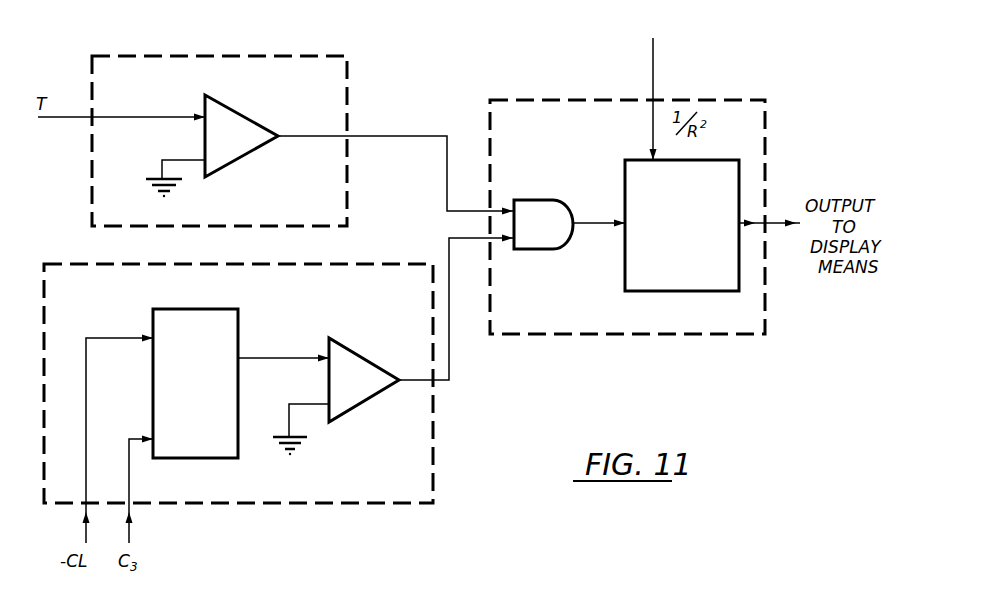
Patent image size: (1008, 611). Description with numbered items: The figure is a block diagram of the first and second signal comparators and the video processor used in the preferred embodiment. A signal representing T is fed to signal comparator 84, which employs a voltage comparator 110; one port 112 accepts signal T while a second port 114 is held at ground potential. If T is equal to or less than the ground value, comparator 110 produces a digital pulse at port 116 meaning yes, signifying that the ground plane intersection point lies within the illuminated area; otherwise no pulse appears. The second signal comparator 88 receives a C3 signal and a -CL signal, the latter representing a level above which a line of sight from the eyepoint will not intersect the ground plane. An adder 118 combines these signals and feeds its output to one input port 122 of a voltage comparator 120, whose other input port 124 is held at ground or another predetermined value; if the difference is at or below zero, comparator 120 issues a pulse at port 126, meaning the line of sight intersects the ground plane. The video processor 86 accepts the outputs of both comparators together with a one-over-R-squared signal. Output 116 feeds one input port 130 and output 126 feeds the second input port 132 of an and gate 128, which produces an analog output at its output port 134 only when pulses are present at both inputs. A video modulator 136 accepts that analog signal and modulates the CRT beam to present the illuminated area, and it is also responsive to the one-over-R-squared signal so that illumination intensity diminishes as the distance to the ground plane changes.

The signal comparator 84 is at (348, 56).
The video processor 86 is at (617, 334).
The second signal comparator 88 is at (433, 465).
The voltage comparator 110 is at (244, 140).
The port 112 is at (205, 114).
The second port 114 is at (205, 157).
The port 116 is at (278, 135).
The adder 118 is at (226, 458).
The voltage comparator 120 is at (358, 357).
The input port 122 is at (329, 345).
The input port 124 is at (329, 402).
The port 126 is at (400, 381).
The and gate 128 is at (555, 235).
The input port 130 is at (514, 200).
The second input port 132 is at (514, 249).
The output port 134 is at (573, 218).
The video modulator 136 is at (686, 280).